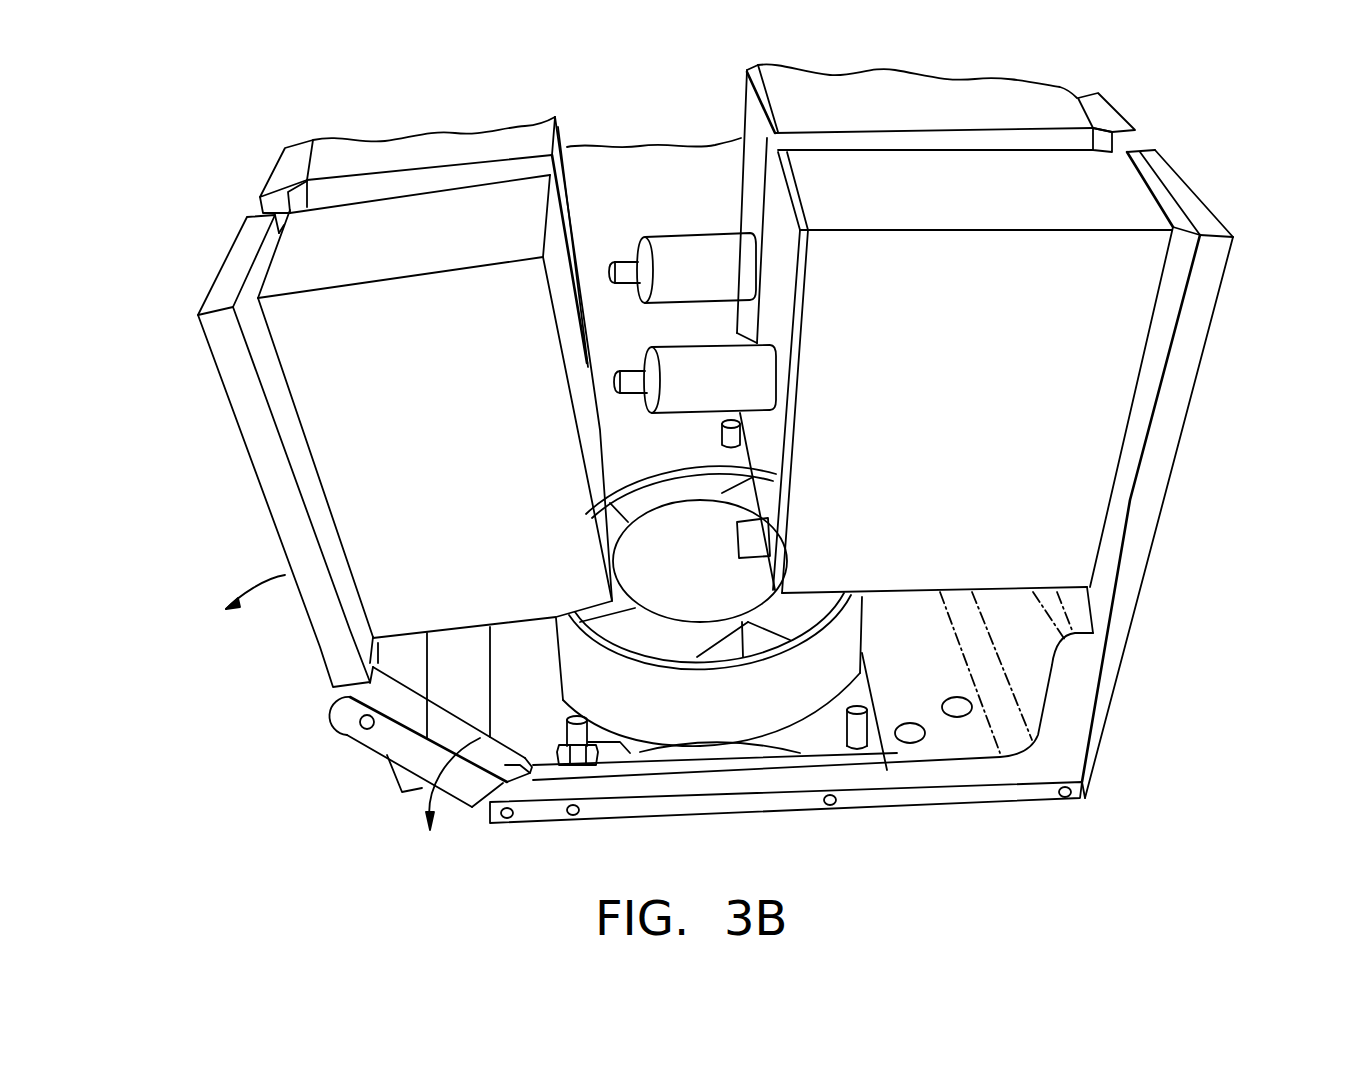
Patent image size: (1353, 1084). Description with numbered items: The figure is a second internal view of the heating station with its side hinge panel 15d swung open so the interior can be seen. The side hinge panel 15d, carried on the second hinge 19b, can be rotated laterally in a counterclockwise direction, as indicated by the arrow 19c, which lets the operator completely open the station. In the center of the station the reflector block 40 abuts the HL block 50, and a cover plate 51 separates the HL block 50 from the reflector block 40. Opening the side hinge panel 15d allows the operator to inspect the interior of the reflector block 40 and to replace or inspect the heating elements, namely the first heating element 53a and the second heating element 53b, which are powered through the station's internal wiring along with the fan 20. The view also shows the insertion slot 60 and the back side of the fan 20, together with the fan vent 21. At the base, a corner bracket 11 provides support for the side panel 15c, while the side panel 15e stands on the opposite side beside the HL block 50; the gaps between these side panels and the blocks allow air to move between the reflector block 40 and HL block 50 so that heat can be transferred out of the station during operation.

The corner bracket 11 is at (1053, 733).
The side panel 15c is at (750, 805).
The side hinge panel 15d is at (252, 428).
The side panel 15e is at (1167, 433).
The second hinge 19b is at (388, 740).
The arrow 19c is at (427, 797).
The fan 20 is at (708, 569).
The fan vent 21 is at (683, 723).
The reflector block 40 is at (528, 225).
The HL block 50 is at (1135, 198).
The cover plate 51 is at (762, 90).
The first heating element 53a is at (705, 243).
The second heating element 53b is at (707, 362).
The insertion slot 60 is at (246, 203).